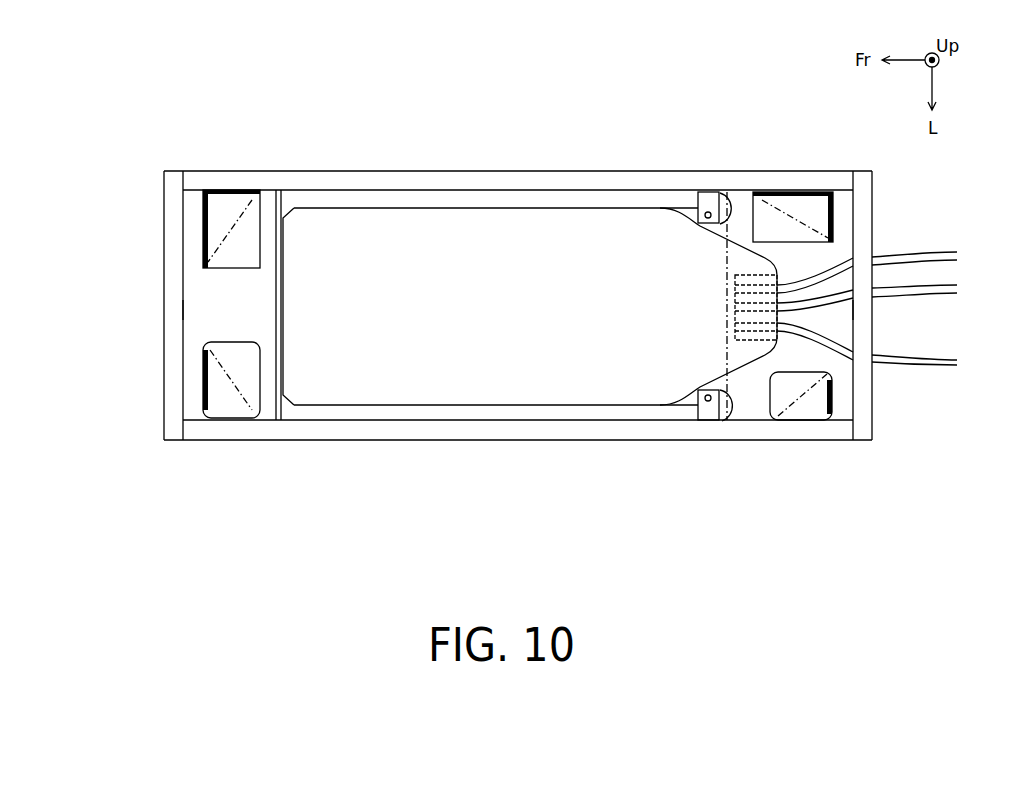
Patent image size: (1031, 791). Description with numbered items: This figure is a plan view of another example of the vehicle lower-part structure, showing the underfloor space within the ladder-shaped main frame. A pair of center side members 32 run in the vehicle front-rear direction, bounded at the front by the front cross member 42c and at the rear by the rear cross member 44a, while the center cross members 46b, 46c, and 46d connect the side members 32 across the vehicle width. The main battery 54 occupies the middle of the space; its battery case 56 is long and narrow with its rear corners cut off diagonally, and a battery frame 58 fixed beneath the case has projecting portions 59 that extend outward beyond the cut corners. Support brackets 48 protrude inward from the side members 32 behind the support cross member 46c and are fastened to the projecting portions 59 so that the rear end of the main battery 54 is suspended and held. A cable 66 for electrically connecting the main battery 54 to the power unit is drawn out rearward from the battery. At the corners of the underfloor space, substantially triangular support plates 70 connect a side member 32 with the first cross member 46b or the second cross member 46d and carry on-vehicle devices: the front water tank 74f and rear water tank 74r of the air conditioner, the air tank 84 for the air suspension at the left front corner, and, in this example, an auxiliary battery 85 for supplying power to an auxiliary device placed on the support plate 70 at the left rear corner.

The center side member 32 is at (470, 180).
The front cross member 42c is at (172, 292).
The rear cross member 44a is at (862, 187).
The center cross member 46b is at (190, 348).
The center cross member 46c is at (287, 415).
The center cross member 46d is at (845, 397).
The support bracket 48 is at (690, 200).
The main battery 54 is at (530, 266).
The battery case 56 is at (553, 220).
The battery frame 58 is at (748, 310).
The projecting portion 59 is at (727, 205).
The cable 66 is at (945, 283).
The support plate 70 is at (215, 190).
The front water tank 74f is at (246, 202).
The rear water tank 74r is at (770, 207).
The air tank 84 is at (232, 365).
The auxiliary battery 85 is at (788, 395).